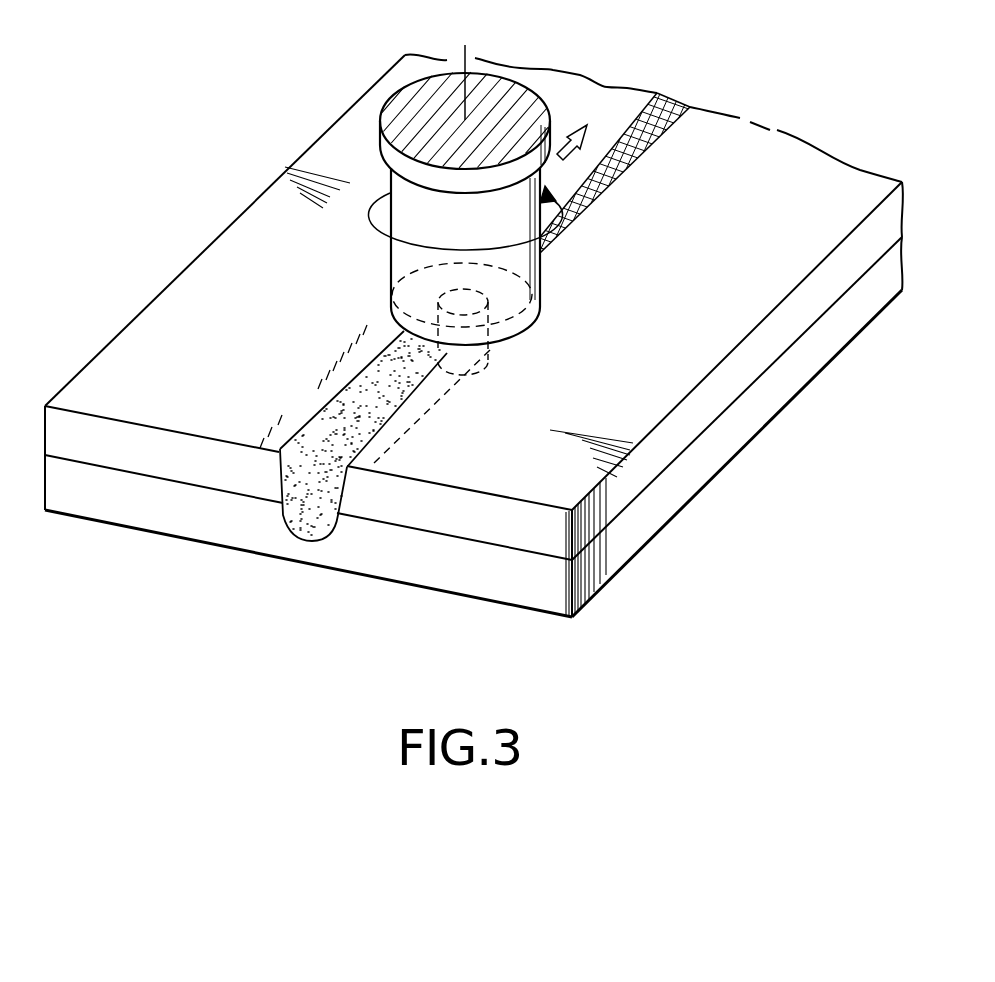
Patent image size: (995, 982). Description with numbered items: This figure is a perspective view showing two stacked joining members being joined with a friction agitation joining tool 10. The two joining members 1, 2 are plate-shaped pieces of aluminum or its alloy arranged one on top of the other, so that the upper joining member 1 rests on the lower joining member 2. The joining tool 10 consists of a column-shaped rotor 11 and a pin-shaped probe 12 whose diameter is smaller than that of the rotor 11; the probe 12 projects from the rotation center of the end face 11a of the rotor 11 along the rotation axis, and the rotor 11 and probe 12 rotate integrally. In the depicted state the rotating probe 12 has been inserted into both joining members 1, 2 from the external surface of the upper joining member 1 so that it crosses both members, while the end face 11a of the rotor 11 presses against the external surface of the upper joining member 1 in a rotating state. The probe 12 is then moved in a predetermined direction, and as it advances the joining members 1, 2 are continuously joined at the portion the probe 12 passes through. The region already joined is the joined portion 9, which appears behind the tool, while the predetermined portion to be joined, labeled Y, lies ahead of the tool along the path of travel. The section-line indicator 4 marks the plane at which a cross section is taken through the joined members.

The joining member 1 is at (670, 367).
The joining member 2 is at (690, 477).
The section line 4- 4 is at (654, 93).
The joined portion 9 is at (318, 442).
The friction agitation joining tool 10 is at (381, 135).
The rotor 11 is at (400, 258).
The end face 11a is at (385, 316).
The probe 12 is at (497, 362).
The predetermined portion to be joined Y is at (613, 150).